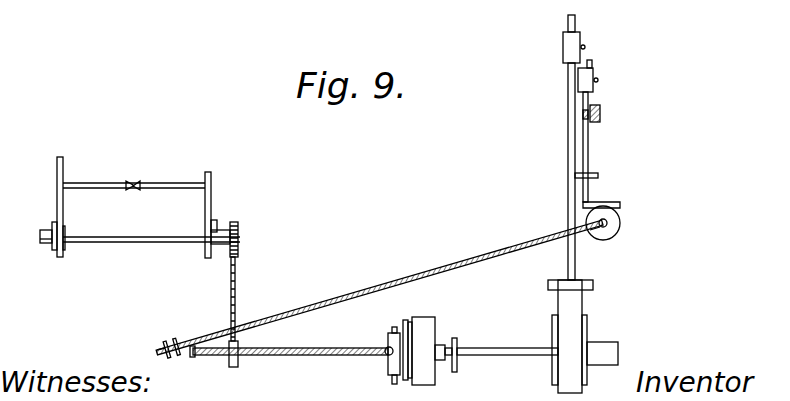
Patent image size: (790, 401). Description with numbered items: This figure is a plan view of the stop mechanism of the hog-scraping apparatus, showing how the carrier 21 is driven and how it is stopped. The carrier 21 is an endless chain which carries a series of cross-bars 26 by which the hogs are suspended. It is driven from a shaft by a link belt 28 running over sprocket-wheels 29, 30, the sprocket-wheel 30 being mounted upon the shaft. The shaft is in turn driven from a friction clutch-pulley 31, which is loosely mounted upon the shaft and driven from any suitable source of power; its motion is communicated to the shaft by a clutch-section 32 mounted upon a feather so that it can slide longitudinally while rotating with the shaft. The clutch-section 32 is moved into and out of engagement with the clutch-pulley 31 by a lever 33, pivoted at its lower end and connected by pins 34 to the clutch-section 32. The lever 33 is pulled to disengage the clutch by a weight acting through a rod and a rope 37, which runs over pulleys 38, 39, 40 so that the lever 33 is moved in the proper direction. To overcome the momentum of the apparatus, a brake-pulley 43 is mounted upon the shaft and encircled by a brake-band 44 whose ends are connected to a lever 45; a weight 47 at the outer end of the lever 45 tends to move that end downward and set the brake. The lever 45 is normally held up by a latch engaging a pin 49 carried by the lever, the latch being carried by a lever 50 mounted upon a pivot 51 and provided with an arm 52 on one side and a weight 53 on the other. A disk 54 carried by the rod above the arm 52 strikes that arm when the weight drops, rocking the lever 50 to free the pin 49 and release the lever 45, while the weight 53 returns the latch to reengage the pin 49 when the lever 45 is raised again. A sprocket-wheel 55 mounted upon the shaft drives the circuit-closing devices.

The carrier 21 is at (510, 348).
The cross-bars 26 is at (91, 183).
The link belt 28 is at (235, 283).
The sprocket-wheel 29 is at (238, 232).
The sprocket-wheel 30 is at (238, 366).
The friction clutch-pulley 31 is at (428, 351).
The clutch-section 32 is at (407, 320).
The lever 33 is at (390, 357).
The pins 34 is at (394, 327).
The rope 37 is at (321, 348).
The pulley 38 is at (599, 232).
The pulley 39 is at (183, 345).
The pulley 40 is at (175, 353).
The brake-pulley 43 is at (588, 337).
The brake-band 44 is at (570, 336).
The lever 45 is at (568, 200).
The weight 47 is at (563, 47).
The pin 49 is at (598, 175).
The lever 50 is at (589, 146).
The pivot 51 is at (601, 115).
The arm 52 is at (616, 212).
The weight 53 is at (594, 73).
The disk 54 is at (608, 228).
The sprocket-wheel 55 is at (457, 340).